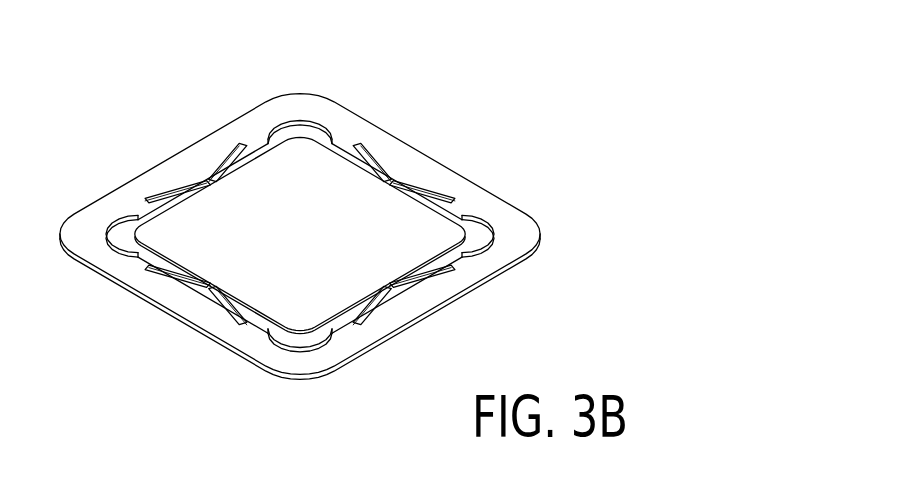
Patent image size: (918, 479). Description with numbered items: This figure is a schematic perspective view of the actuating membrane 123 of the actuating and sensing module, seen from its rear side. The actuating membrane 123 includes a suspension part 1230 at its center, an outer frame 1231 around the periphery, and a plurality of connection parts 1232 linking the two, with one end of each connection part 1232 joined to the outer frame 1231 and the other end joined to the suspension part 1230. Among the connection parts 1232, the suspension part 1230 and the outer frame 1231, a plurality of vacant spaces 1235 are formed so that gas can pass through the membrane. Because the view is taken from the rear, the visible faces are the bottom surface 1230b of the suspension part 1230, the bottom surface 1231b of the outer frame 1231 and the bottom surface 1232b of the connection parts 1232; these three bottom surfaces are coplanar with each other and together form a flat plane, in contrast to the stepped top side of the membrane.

The actuating membrane 123 is at (686, 70).
The suspension part 1230 is at (276, 335).
The bottom surface of the suspension part 1230b is at (313, 321).
The outer frame 1231 is at (539, 259).
The bottom surface of the outer frame 1231b is at (519, 235).
The connection parts 1232 is at (211, 182).
The bottom surface of the connection parts 1232b is at (220, 170).
The vacant spaces 1235 is at (298, 130).